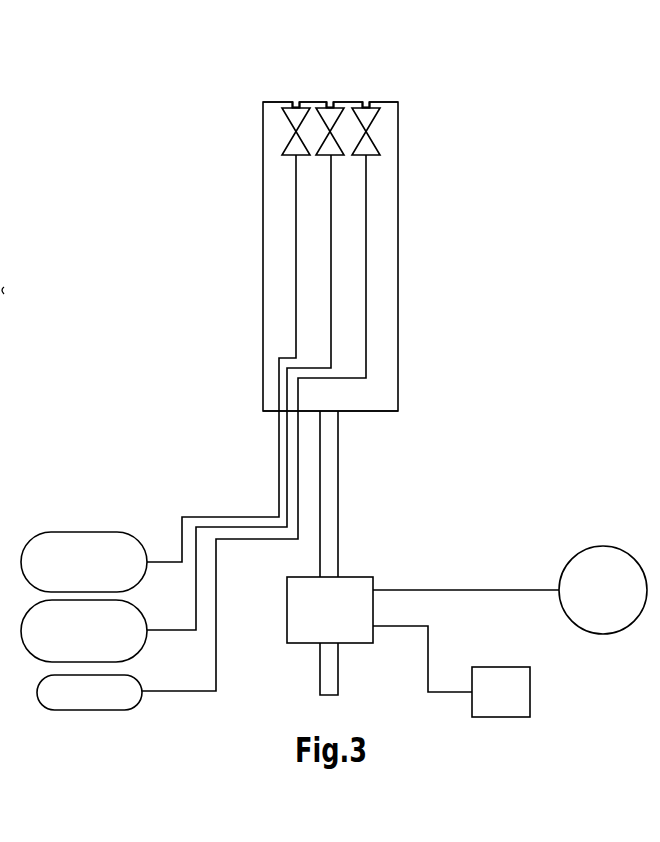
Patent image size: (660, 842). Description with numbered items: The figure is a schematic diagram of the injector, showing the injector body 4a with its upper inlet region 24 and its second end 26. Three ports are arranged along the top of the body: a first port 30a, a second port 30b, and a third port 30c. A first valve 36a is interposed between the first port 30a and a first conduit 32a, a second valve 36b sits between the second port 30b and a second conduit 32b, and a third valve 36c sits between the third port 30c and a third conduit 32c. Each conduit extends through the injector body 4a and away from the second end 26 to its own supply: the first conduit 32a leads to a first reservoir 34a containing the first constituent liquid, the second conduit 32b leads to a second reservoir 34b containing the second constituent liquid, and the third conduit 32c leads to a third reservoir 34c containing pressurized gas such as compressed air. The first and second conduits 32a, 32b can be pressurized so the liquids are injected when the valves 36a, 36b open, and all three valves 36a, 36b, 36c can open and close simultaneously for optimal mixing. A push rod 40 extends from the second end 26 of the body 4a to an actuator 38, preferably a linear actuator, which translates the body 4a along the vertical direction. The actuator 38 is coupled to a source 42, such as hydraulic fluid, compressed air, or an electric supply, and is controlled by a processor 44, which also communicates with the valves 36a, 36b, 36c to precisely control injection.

The injector body 4a is at (400, 201).
The inlet plate 24 is at (392, 102).
The second end 26 is at (383, 412).
The first port 30a is at (295, 107).
The second port 30b is at (330, 107).
The third port 30c is at (366, 107).
The first valve 36a is at (293, 116).
The second valve 36b is at (330, 147).
The third valve 36c is at (368, 113).
The first conduit 32a is at (296, 288).
The second conduit 32b is at (330, 243).
The third conduit 32c is at (366, 270).
The first reservoir 34a is at (74, 571).
The second reservoir 34b is at (74, 636).
The third reservoir 34c is at (72, 695).
The actuator 38 is at (318, 620).
The push rod 40 is at (338, 490).
The source 42 is at (591, 600).
The processor 44 is at (489, 701).